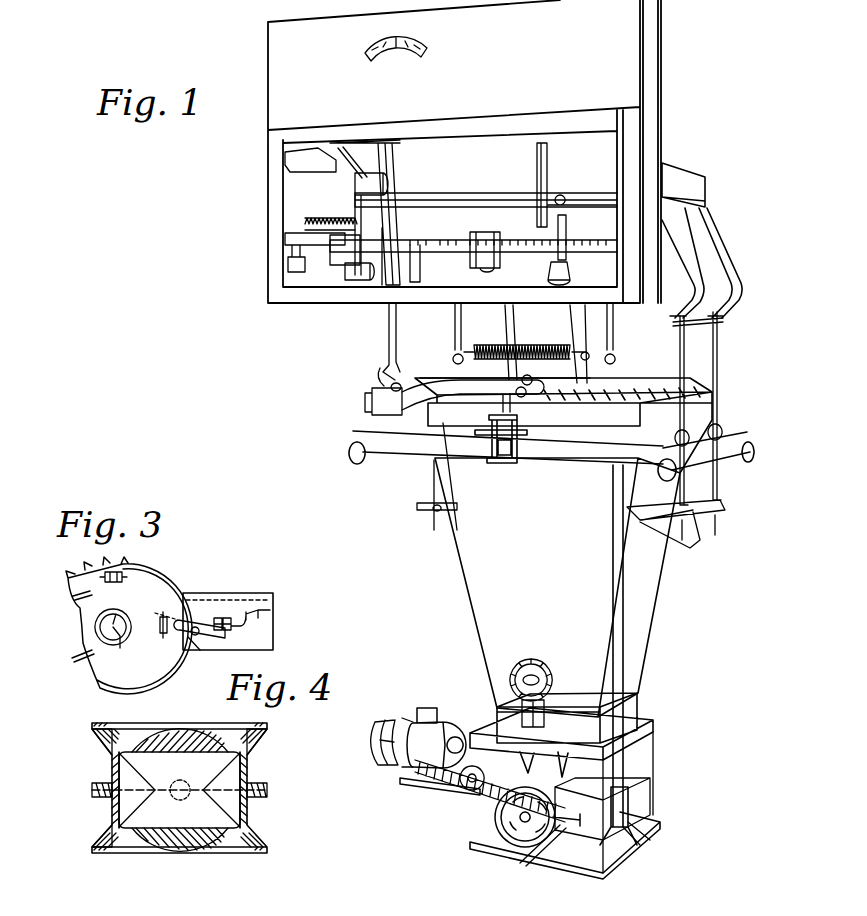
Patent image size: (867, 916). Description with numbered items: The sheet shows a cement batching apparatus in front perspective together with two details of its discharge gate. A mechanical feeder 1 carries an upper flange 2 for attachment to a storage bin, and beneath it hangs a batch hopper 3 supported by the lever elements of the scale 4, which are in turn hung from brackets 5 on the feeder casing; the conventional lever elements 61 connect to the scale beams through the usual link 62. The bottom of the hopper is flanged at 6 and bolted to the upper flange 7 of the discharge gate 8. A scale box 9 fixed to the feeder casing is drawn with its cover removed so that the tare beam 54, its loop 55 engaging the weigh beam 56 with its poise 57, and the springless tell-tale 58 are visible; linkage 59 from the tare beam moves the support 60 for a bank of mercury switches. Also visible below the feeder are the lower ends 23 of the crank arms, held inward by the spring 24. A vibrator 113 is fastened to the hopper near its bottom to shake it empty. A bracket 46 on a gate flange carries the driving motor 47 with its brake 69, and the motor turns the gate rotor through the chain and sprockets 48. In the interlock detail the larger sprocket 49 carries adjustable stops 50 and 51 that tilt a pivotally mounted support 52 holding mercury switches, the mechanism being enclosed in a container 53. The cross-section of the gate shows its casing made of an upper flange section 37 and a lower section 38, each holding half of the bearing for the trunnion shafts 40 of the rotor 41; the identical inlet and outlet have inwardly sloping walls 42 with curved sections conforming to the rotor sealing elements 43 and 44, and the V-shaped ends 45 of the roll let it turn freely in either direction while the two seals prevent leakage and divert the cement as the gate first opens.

In FIG. 1, the mechanical feeder 1 is at (692, 242).
In FIG. 1, the upper flange 2 is at (684, 176).
In FIG. 1, the batch hopper 3 is at (487, 578).
In FIG. 1, the scale 4 is at (724, 451).
In FIG. 1, the brackets 5 is at (721, 322).
In FIG. 1, the hopper bottom flange 6 is at (654, 712).
In FIG. 1, the upper flange of discharge gate 7 is at (658, 738).
In FIG. 1, the discharge gate 8 is at (654, 766).
In FIG. 4, the discharge gate 8 is at (82, 794).
In FIG. 1, the scale box 9 is at (268, 171).
In FIG. 1, the lower ends of crank arms 23 is at (450, 337).
In FIG. 1, the spring 24 is at (510, 349).
In FIG. 4, the upper flange section 37 is at (244, 784).
In FIG. 4, the lower section 38 is at (248, 810).
In FIG. 3, the trunnion shafts 40 is at (120, 636).
In FIG. 4, the trunnion shafts 40 is at (182, 786).
In FIG. 4, the rotor 41 is at (190, 849).
In FIG. 4, the inwardly sloping walls 42 is at (118, 723).
In FIG. 4, the curved sections / sealing element 43 is at (172, 732).
In FIG. 4, the sealing element 44 is at (162, 850).
In FIG. 4, the V-shaped roll ends 45 is at (204, 798).
In FIG. 1, the bracket 46 is at (414, 776).
In FIG. 1, the driving motor 47 is at (436, 722).
In FIG. 1, the chain and sprockets 48 is at (470, 788).
In FIG. 1, the larger sprocket 49 is at (510, 827).
In FIG. 3, the larger sprocket 49 is at (77, 622).
In FIG. 3, the adjustable stop 50 is at (125, 567).
In FIG. 3, the adjustable stop 51 is at (152, 622).
In FIG. 3, the pivotally mounted support 52 is at (203, 636).
In FIG. 1, the container 53 is at (610, 835).
In FIG. 3, the container 53 is at (247, 593).
In FIG. 1, the tare beam 54 is at (468, 209).
In FIG. 1, the loop 55 is at (566, 232).
In FIG. 1, the weigh beam 56 is at (539, 252).
In FIG. 1, the poise 57 is at (476, 251).
In FIG. 1, the tell-tale 58 is at (397, 52).
In FIG. 1, the linkage 59 is at (346, 213).
In FIG. 1, the switch support 60 is at (314, 222).
In FIG. 1, the lever elements 61 is at (563, 460).
In FIG. 1, the link 62 is at (389, 346).
In FIG. 1, the brake 69 is at (390, 722).
In FIG. 1, the vibrator 113 is at (548, 657).